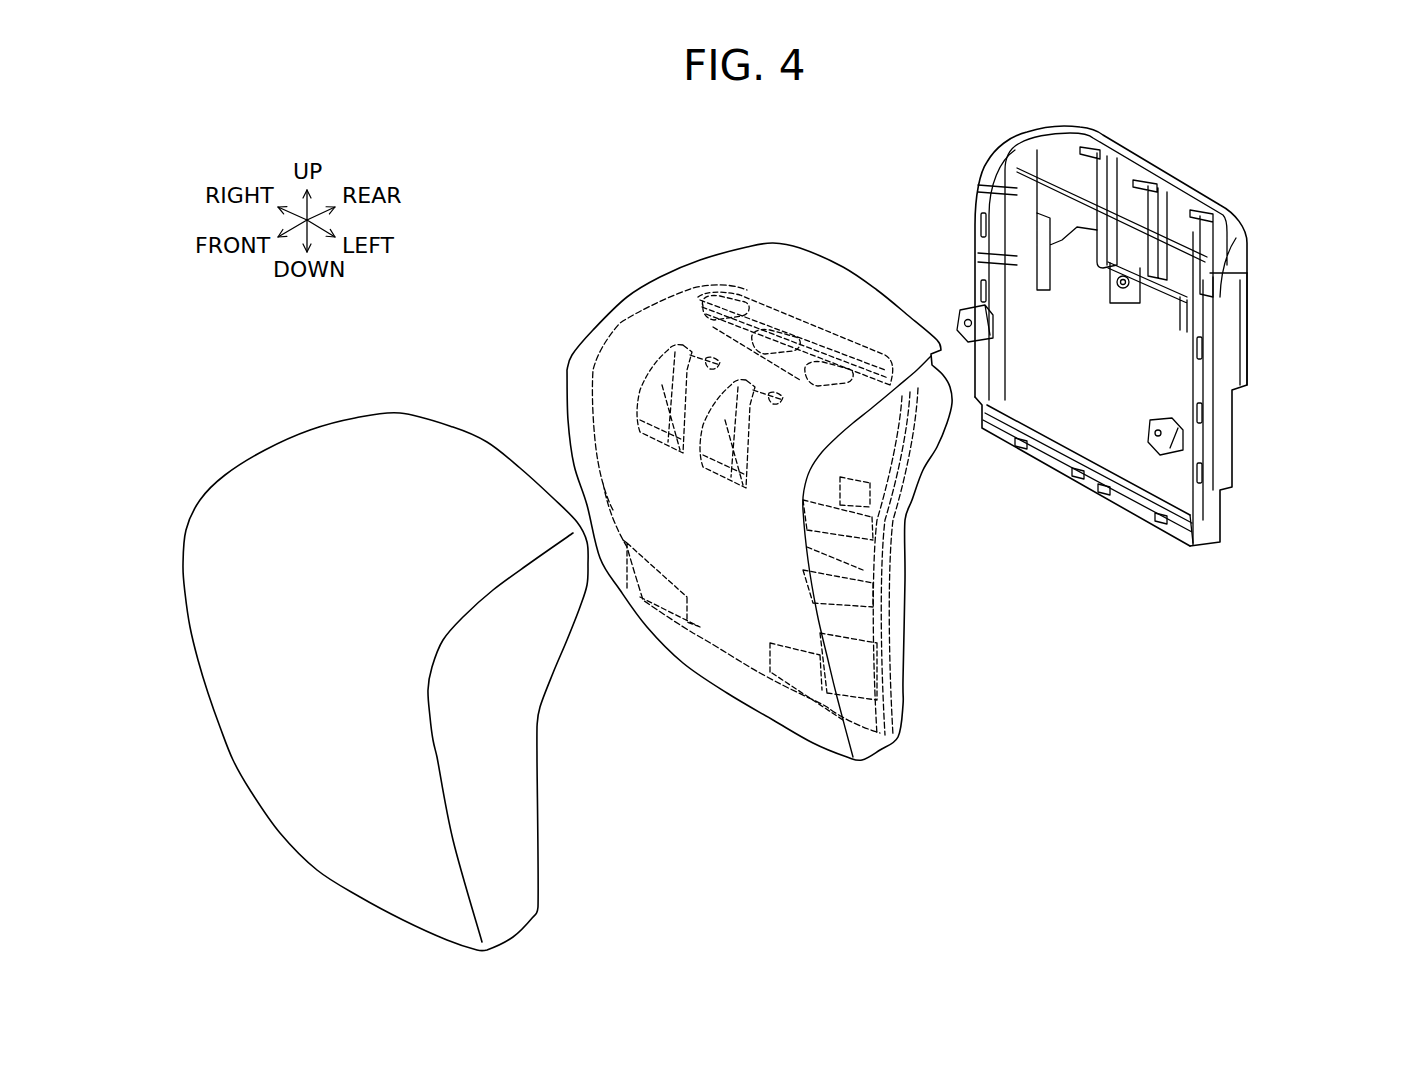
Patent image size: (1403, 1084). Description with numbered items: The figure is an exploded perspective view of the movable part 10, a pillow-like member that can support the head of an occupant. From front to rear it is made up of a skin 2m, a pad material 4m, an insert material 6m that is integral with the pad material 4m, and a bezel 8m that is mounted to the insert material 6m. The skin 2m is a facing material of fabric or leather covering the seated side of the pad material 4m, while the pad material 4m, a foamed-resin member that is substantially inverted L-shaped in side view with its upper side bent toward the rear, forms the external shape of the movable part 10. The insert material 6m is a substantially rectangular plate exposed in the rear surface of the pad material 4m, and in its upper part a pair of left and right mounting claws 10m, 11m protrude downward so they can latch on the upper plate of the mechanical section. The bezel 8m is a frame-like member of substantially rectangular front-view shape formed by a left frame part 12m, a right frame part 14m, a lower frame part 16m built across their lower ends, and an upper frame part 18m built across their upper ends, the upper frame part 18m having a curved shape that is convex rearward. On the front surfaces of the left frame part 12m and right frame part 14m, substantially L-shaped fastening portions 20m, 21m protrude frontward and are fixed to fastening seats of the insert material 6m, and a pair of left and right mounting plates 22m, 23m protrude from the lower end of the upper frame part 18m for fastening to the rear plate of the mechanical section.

The movable part 10 is at (527, 232).
The skin 2m is at (333, 426).
The pad material 4m is at (651, 278).
The insert material 6m is at (720, 290).
The bezel 8m is at (1142, 152).
The mounting claw 10m is at (729, 475).
The mounting claw 11m is at (670, 446).
The left frame part 12m is at (1210, 348).
The right frame part 14m is at (983, 243).
The lower frame part 16m is at (1130, 507).
The upper frame part 18m is at (1180, 213).
The fastening portion 20m is at (1150, 430).
The fastening portion 21m is at (977, 327).
The mounting plate 22m is at (1182, 308).
The mounting plate 23m is at (1115, 263).